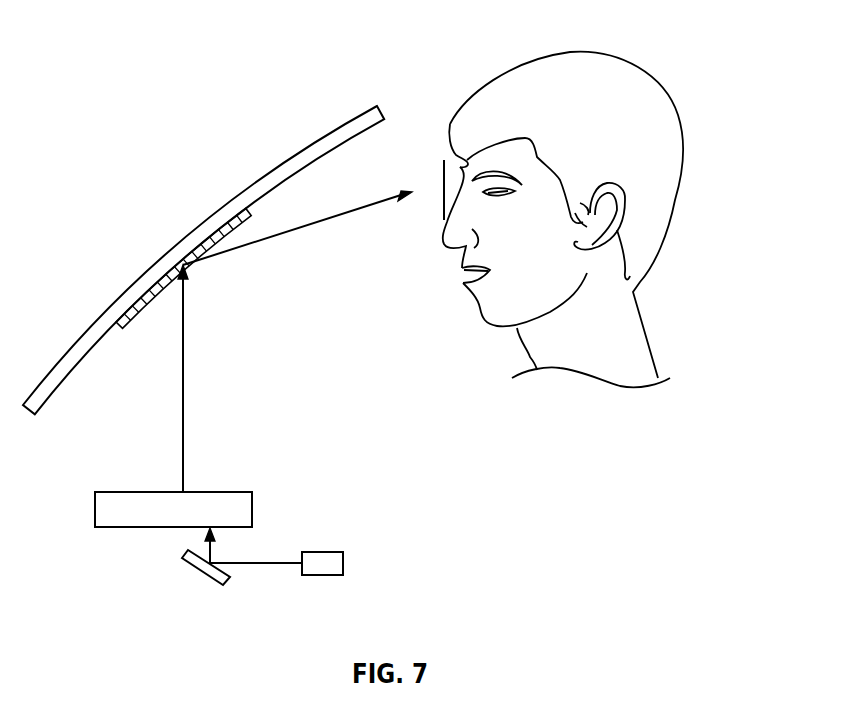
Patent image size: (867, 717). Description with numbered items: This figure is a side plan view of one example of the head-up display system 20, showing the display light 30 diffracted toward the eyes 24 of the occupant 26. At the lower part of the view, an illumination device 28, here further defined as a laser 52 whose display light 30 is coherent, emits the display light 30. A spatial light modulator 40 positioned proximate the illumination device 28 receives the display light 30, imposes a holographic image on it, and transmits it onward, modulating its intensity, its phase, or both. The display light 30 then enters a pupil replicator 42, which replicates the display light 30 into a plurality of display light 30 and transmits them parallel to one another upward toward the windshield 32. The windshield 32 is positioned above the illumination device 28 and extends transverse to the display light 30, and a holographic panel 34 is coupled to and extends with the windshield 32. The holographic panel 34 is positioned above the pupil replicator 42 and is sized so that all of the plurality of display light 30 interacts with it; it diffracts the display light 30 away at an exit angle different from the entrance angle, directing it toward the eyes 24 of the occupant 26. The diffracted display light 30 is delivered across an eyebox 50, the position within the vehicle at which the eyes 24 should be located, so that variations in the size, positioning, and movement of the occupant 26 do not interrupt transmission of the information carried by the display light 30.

The head-up display system 20 is at (172, 160).
The eyes 24 is at (495, 190).
The occupant 26 is at (683, 147).
The illumination device 28 is at (333, 563).
The display light 30 is at (186, 387).
The windshield 32 is at (307, 143).
The holographic panel 34 is at (116, 328).
The spatial light modulator 40 is at (205, 573).
The pupil replicator 42 is at (122, 528).
The eyebox 50 is at (442, 190).
The laser 52 is at (340, 548).